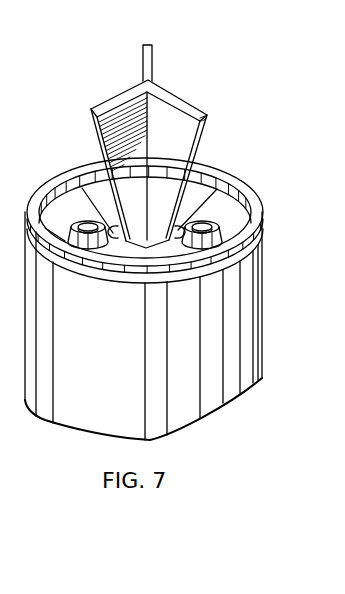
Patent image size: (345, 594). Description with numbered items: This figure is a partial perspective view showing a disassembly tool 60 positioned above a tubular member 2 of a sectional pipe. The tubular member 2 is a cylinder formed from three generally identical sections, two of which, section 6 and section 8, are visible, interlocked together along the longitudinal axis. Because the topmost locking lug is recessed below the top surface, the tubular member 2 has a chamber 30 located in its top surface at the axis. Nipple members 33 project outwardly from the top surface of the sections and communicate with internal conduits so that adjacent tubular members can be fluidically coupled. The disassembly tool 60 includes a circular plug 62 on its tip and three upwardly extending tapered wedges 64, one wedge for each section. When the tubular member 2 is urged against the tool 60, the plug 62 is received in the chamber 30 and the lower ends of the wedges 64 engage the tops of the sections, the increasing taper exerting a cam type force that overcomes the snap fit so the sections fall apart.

The tubular member 2 is at (268, 283).
The section 6 is at (78, 422).
The section 8 is at (229, 380).
The chamber 30 is at (158, 250).
The nipple member 33 is at (80, 223).
The disassembly tool 60 is at (173, 75).
The circular plug 62 is at (140, 246).
The tapered wedge 64 is at (150, 44).